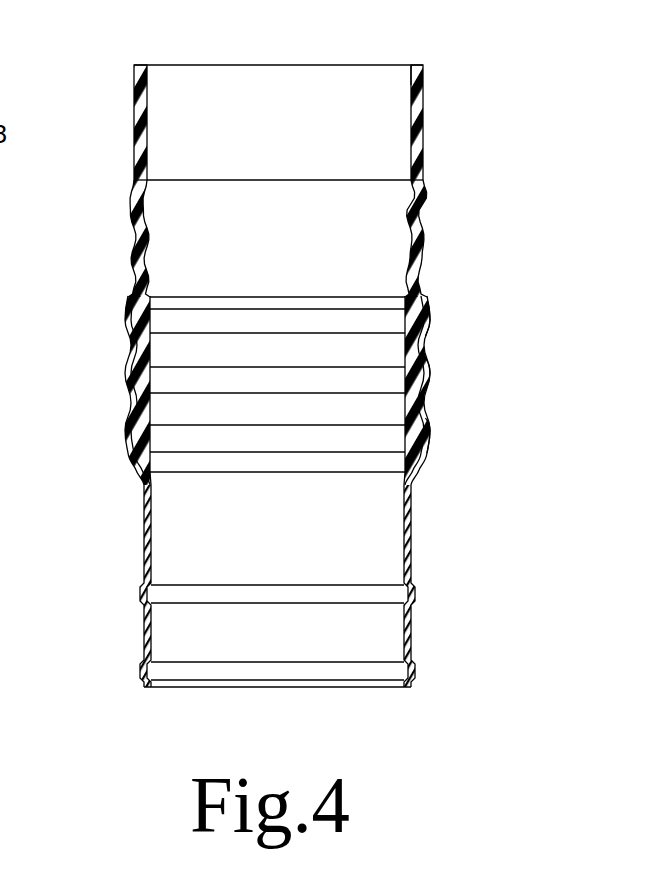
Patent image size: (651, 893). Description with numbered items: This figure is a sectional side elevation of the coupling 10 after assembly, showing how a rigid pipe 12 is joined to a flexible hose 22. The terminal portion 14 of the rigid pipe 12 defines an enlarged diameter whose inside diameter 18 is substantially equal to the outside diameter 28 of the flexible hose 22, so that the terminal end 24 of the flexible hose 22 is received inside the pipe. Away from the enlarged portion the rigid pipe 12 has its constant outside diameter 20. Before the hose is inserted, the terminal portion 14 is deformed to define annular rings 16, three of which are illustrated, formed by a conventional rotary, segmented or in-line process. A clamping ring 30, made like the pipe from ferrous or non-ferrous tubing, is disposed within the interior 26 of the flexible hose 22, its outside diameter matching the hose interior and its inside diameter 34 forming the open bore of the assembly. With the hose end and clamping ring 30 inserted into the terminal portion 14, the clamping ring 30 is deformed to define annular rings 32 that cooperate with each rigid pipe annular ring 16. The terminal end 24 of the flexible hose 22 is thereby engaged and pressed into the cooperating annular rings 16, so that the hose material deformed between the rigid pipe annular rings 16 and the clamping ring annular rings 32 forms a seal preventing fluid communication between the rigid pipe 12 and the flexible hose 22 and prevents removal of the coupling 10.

The coupling 10 is at (317, 352).
The rigid pipe 12 is at (414, 518).
The terminal portion of the rigid pipe 14 is at (468, 390).
The annular rings of the rigid pipe 16 is at (122, 437).
The inside diameter of the enlarged portion of the rigid pipe 18 is at (430, 318).
The constant outside diameter of the rigid pipe 20 is at (430, 410).
The flexible hose 22 is at (315, 157).
The terminal end of the flexible hose 24 is at (430, 380).
The interior of the flexible hose 26 is at (410, 82).
The outside diameter of the flexible hose 28 is at (423, 143).
The clamping ring 30 is at (235, 421).
The annular rings of the clamping ring 32 is at (303, 383).
The inside diameter of the clamping ring 34 is at (321, 413).